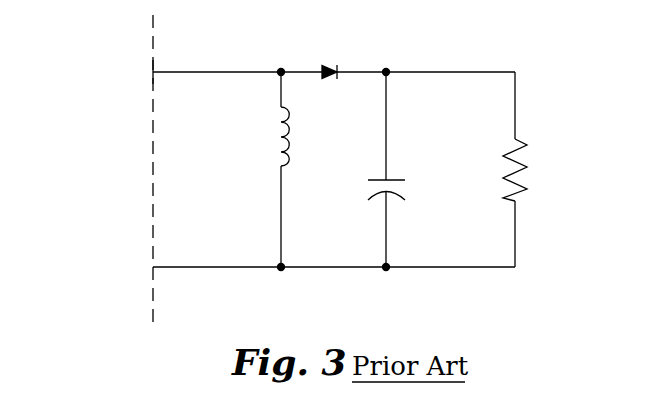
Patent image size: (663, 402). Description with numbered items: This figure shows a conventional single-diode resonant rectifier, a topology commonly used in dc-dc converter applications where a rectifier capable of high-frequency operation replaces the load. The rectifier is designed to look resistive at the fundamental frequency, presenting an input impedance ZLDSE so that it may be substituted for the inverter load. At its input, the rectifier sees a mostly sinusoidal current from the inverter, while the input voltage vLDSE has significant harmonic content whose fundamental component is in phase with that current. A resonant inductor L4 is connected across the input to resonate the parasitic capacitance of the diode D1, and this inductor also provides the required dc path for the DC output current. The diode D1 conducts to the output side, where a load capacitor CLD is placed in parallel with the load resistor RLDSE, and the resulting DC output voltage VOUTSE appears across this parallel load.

The input impedance ZLDSE is at (86, 149).
The rectifier input voltage vLDSE is at (209, 170).
The resonant inductor L4 is at (268, 169).
The diode D1 is at (333, 90).
The load capacitor CLD is at (359, 169).
The load resistor RLDSE is at (474, 169).
The output voltage VOUTSE is at (584, 168).